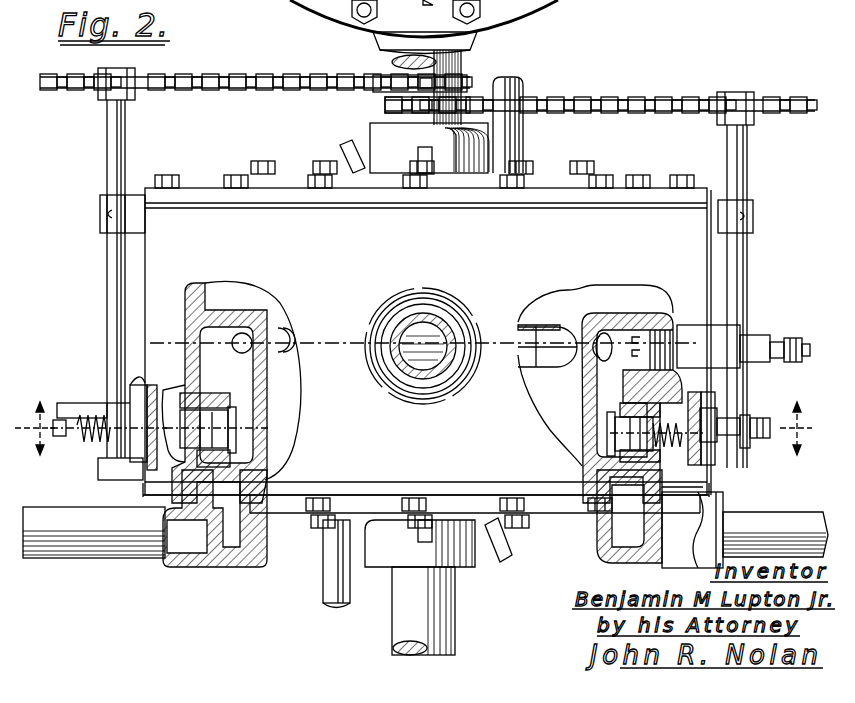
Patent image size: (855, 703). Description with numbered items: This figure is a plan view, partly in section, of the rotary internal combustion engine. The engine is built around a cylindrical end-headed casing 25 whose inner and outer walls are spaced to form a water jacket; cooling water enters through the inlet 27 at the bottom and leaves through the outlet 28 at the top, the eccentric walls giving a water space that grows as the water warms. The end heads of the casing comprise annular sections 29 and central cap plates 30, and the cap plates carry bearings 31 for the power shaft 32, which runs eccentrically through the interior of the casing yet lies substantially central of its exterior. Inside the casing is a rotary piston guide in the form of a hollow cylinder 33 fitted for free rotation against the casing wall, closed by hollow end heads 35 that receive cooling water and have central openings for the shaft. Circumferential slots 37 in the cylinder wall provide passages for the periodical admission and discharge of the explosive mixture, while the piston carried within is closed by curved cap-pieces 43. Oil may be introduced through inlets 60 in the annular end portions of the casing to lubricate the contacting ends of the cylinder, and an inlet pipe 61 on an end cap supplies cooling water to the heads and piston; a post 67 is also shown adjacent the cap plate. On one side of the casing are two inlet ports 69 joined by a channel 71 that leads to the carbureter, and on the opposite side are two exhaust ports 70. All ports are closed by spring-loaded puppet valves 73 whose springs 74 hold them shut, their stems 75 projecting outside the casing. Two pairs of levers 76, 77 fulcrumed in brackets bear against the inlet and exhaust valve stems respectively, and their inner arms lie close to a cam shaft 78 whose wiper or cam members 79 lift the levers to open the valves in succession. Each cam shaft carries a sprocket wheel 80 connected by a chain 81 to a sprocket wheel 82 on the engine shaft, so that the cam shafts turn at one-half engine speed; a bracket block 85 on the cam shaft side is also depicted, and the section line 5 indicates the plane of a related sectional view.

The section line 5- 5 is at (415, 428).
The cylindrical end-headed casing 25 is at (143, 300).
The inlet 27 is at (460, 62).
The outlet 28 is at (462, 310).
The annular sections 29 is at (200, 186).
The cap plates 30 is at (285, 175).
The bearings 31 is at (426, 345).
The power shaft 32 is at (392, 625).
The hollow cylinder 33 is at (265, 400).
The end heads 35 is at (280, 436).
The circumferential slots 37 is at (290, 334).
The cap-pieces 43 is at (520, 362).
The inlets 60 is at (455, 165).
The inlet pipe 61 is at (323, 585).
The post 67 is at (524, 142).
The inlet ports 69 is at (580, 392).
The exhaust ports 70 is at (235, 322).
The channel 71 is at (600, 545).
The puppet valves 73 is at (270, 450).
The springs 74 is at (85, 440).
The stems 75 is at (740, 412).
The levers 76 is at (752, 440).
The levers 77 is at (60, 405).
The cam shaft 78 is at (104, 268).
The cam members 79 is at (133, 395).
The sprocket wheel 80 is at (128, 92).
The chain 81 is at (248, 92).
The sprocket wheel 82 is at (385, 98).
The block 85 is at (755, 330).